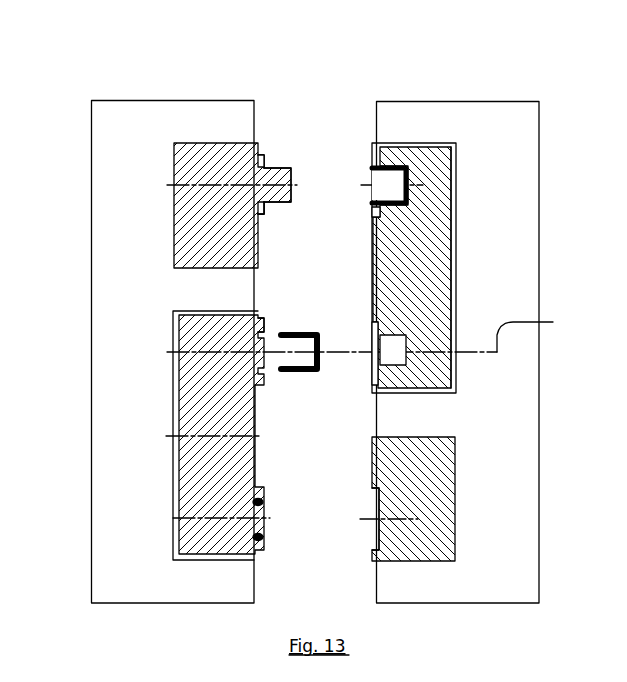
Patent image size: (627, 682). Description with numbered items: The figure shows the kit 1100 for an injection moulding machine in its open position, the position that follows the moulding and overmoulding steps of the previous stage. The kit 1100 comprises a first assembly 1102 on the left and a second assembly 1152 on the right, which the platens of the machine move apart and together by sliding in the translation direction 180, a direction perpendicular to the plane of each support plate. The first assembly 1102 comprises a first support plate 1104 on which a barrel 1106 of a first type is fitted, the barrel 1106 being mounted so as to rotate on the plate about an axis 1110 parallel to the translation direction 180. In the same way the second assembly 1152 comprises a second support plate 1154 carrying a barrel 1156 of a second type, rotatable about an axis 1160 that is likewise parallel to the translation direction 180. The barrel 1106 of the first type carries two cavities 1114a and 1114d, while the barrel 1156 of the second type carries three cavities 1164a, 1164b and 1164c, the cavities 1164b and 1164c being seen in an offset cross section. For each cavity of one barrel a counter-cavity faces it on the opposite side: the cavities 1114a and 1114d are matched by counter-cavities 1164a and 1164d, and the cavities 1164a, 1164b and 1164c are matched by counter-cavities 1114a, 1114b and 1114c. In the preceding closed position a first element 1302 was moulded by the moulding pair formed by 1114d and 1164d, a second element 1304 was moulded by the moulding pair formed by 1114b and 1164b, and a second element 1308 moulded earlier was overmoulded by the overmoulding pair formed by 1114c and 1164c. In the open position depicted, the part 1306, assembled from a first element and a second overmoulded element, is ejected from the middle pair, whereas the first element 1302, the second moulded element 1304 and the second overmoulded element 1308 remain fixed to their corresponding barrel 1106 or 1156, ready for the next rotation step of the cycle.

The kit 1100 is at (280, 46).
The first assembly 1102 is at (133, 81).
The first support plate 1104 is at (103, 127).
The barrel of a first type 1106 is at (180, 364).
The axis 1110 is at (180, 457).
The cavity 1114a is at (258, 333).
The counter-cavity 1114b is at (275, 168).
The counter-cavity 1114c is at (278, 202).
The cavity 1114d is at (260, 502).
The second assembly 1152 is at (465, 74).
The second support plate 1154 is at (513, 125).
The barrel of a second type 1156 is at (441, 206).
The axis 1160 is at (441, 285).
The cavity 1164a is at (383, 364).
The cavity 1164b is at (373, 177).
The cavity 1164c is at (430, 268).
The counter-cavity 1164d is at (380, 527).
The translation direction 180 is at (544, 332).
The first element 1302 is at (260, 537).
The second element 1304 is at (398, 167).
The part 1306 is at (317, 373).
The second overmoulded element 1308 is at (423, 215).